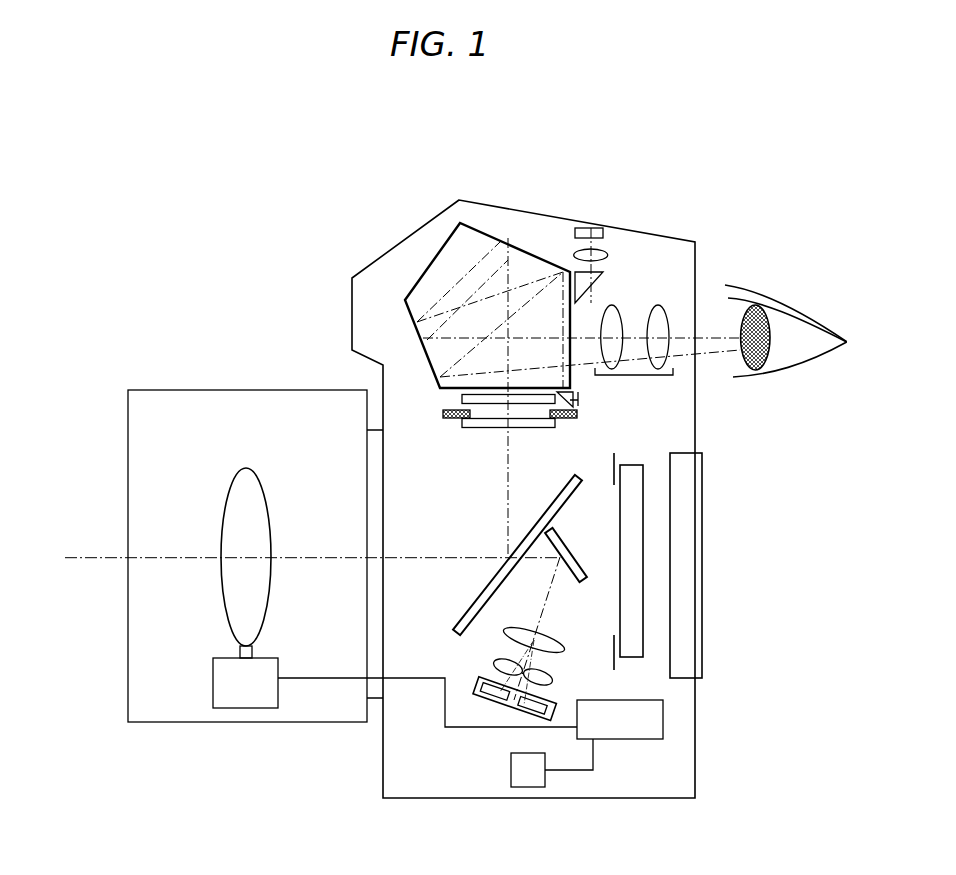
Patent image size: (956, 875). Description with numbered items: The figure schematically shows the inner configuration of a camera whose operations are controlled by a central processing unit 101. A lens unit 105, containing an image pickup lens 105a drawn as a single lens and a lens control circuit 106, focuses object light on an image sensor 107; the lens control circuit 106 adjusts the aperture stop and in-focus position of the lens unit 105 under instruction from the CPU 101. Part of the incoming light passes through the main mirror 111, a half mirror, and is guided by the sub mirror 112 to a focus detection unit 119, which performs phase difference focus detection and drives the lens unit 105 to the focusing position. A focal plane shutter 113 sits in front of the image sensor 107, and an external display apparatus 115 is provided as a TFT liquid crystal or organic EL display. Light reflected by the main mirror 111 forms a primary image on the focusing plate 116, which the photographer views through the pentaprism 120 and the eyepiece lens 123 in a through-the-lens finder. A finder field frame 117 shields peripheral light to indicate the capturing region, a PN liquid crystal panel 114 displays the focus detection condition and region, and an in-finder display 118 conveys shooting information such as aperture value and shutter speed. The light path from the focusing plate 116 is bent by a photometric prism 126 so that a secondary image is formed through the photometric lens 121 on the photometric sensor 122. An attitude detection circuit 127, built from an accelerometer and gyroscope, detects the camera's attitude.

The central processing unit 101 is at (638, 739).
The lens unit 105 is at (150, 390).
The image pickup lens 105a is at (221, 525).
The lens control circuit 106 is at (245, 710).
The image sensor 107 is at (645, 632).
The main mirror 111 is at (468, 640).
The sub mirror 112 is at (587, 565).
The focal plane shutter 113 is at (618, 663).
The PN liquid crystal panel 114 is at (462, 397).
The external display apparatus 115 is at (702, 631).
The focusing plate 116 is at (578, 420).
The finder field frame 117 is at (443, 413).
The in-finder display 118 is at (578, 407).
The focus detection unit 119 is at (488, 702).
The pentaprism 120 is at (437, 258).
The photometric lens 121 is at (600, 253).
The photometric sensor 122 is at (592, 228).
The eyepiece lens 123 is at (635, 375).
The photometric prism 126 is at (575, 272).
The attitude detection circuit 127 is at (532, 788).